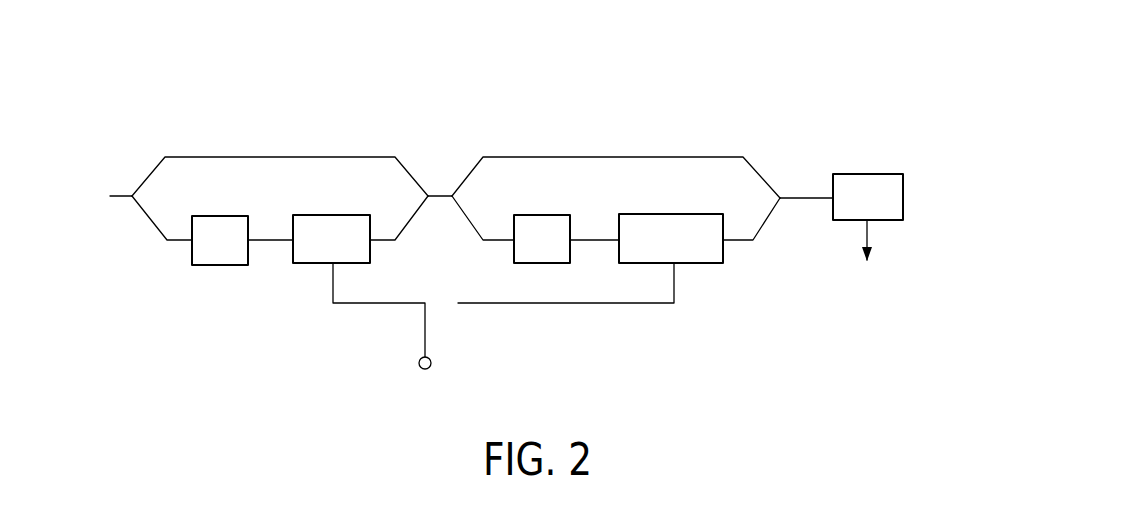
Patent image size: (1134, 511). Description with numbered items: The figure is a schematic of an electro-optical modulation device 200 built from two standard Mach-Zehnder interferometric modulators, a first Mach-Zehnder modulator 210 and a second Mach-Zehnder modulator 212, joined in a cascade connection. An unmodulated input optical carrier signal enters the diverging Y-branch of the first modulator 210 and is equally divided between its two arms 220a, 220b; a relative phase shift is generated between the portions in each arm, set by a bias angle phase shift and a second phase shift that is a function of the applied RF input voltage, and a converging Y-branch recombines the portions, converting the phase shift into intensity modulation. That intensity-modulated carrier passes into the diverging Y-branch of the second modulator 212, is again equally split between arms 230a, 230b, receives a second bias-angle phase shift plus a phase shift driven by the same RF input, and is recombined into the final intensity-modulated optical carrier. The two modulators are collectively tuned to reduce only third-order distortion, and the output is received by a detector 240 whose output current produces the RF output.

The modulation device 200 is at (518, 218).
The first Mach-Zehnder modulator 210 is at (280, 192).
The second Mach-Zehnder modulator 212 is at (616, 188).
The arm of first modulator 220a is at (287, 157).
The arm of first modulator 220b is at (265, 243).
The arm of second modulator 230a is at (593, 157).
The arm of second modulator 230b is at (735, 239).
The detector 240 is at (877, 173).